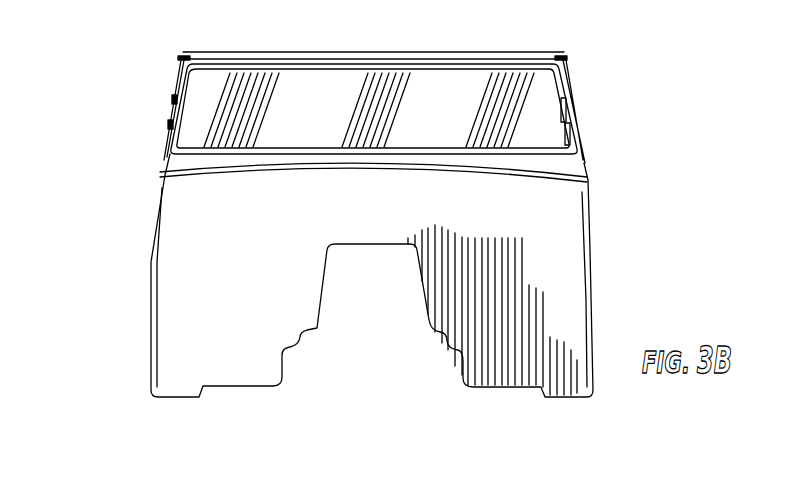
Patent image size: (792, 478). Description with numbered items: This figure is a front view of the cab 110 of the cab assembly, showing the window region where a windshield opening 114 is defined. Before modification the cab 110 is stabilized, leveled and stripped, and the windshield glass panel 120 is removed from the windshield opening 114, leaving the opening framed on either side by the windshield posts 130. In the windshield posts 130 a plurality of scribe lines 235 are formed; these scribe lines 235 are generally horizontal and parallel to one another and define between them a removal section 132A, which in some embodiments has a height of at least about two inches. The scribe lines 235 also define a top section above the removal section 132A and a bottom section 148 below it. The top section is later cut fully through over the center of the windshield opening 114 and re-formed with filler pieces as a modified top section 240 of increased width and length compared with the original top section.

The cab 110 is at (411, 198).
The windshield opening 114 is at (259, 147).
The windshield glass panel 120 is at (362, 157).
The windshield posts 130 is at (163, 139).
The removal section 132A is at (183, 113).
The bottom section 148 is at (607, 282).
The scribe lines 235 is at (177, 99).
The modified top section 240 is at (577, 57).